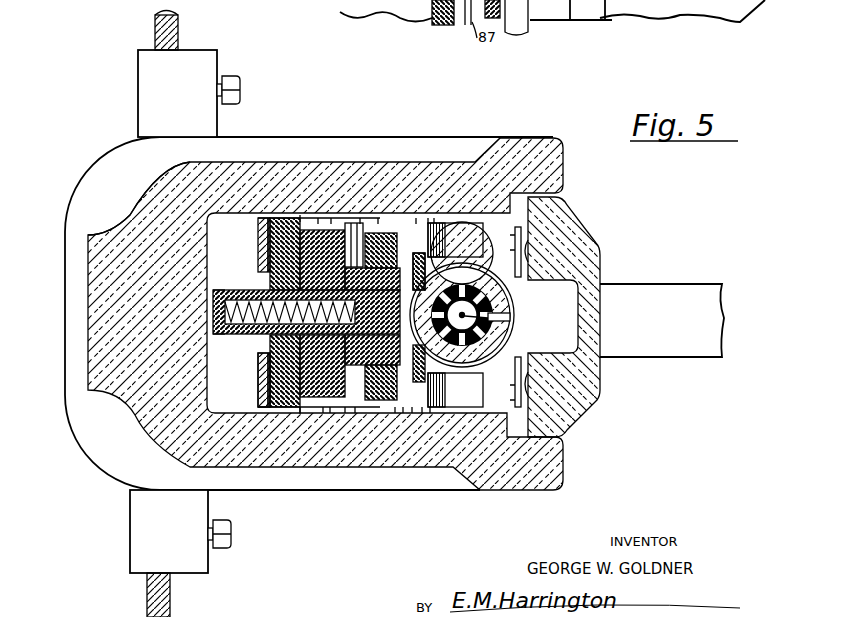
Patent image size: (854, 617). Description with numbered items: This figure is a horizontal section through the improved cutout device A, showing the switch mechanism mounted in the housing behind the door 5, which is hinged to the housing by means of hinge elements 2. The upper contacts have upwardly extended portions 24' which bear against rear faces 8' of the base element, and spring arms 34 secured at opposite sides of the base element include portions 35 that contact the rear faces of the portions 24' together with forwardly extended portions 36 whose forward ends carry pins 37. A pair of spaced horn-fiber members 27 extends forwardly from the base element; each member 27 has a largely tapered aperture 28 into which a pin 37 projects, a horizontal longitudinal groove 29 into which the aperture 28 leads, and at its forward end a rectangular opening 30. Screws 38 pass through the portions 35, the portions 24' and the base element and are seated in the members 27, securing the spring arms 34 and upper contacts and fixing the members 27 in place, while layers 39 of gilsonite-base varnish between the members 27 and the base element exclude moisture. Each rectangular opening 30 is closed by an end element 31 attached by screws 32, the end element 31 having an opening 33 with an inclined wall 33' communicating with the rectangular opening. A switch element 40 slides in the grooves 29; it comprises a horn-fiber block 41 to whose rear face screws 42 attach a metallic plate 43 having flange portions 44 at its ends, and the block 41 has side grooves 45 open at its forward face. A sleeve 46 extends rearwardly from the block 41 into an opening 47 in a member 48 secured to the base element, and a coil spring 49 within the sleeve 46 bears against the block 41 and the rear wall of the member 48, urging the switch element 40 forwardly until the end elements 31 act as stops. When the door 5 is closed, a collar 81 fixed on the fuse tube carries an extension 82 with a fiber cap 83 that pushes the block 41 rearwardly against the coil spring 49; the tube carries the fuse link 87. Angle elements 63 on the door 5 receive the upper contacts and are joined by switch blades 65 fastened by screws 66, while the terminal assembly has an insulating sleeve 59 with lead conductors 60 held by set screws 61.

The hinge elements 2 is at (243, 137).
The door 5 is at (598, 270).
The rear faces 8' is at (240, 317).
The upwardly extended portions 24' is at (248, 274).
The spaced members 27 is at (398, 222).
The apertures 28 is at (360, 222).
The grooves 29 is at (428, 225).
The rectangular opening 30 is at (416, 225).
The end element 31 is at (500, 280).
The screws 32 is at (440, 243).
The opening 33 is at (463, 317).
The inclined wall 33' is at (468, 315).
The spring arms 34 is at (300, 215).
The portions 35 is at (258, 222).
The forwardly extended portions 36 is at (331, 222).
The pins 37 is at (378, 222).
The screws 38 is at (257, 254).
The layers of varnish 39 is at (318, 218).
The switch element 40 is at (402, 222).
The block 41 is at (345, 408).
The screws 42 is at (274, 282).
The metallic plate 43 is at (262, 294).
The flange portions 44 is at (352, 222).
The grooves 45 is at (390, 222).
The sleeve 46 is at (217, 287).
The opening 47 is at (213, 330).
The member 48 is at (225, 312).
The coil spring 49 is at (213, 300).
The insulating sleeve 59 is at (138, 68).
The conductors 60 is at (178, 22).
The set screws 61 is at (230, 78).
The angle elements 63 is at (516, 240).
The switch blades 65 is at (518, 224).
The screws 66 is at (516, 262).
The collar 81 is at (500, 319).
The extension 82 is at (395, 408).
The cap 83 is at (403, 408).
The fuse link 87 is at (505, 316).
The cutout device A is at (573, 181).